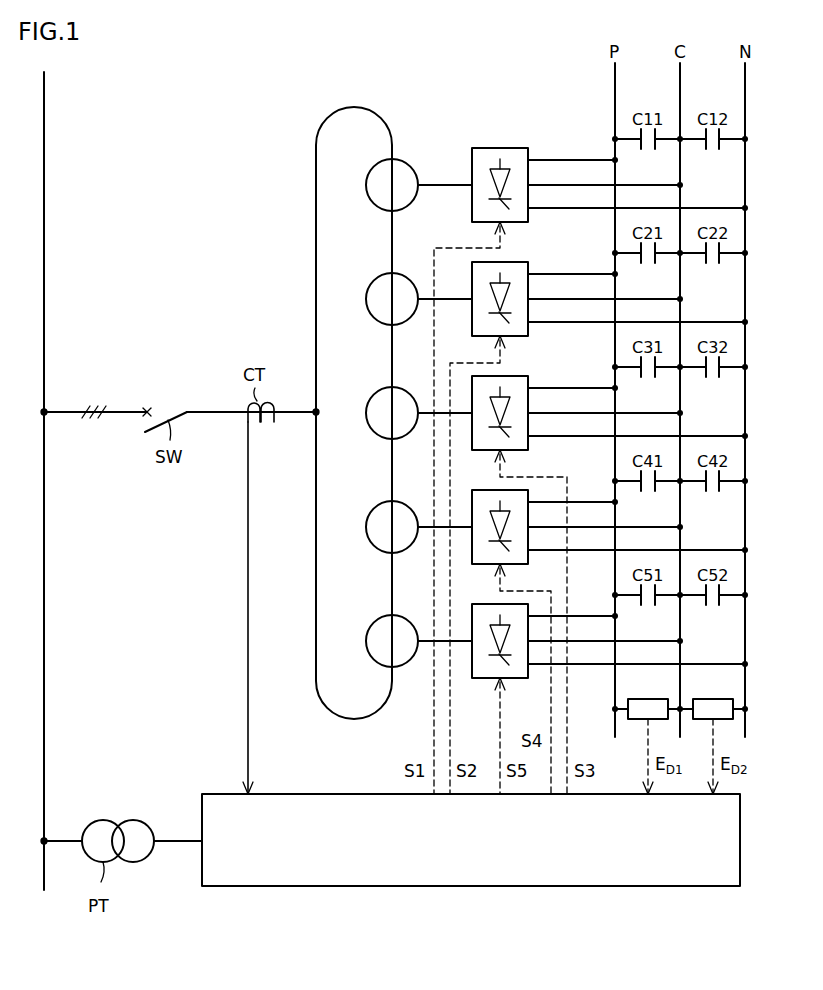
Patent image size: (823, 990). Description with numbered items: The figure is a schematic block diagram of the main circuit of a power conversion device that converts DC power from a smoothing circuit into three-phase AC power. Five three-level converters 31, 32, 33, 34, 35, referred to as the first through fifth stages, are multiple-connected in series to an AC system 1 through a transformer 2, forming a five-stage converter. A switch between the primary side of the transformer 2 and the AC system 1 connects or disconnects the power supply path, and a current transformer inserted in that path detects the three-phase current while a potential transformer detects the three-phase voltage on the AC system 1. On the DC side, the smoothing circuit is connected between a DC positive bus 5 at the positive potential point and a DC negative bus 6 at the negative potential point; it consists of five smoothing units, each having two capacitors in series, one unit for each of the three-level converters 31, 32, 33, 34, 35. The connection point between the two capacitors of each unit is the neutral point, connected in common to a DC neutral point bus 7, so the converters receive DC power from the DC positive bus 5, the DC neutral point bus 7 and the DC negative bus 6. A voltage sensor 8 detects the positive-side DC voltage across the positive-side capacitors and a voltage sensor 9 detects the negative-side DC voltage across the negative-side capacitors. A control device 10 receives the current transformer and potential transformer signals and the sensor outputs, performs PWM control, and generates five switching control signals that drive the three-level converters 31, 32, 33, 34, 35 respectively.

The AC system 1 is at (44, 104).
The transformer 2 is at (362, 100).
The DC positive bus 5 is at (614, 89).
The DC negative bus 6 is at (746, 89).
The DC neutral point bus 7 is at (681, 89).
The voltage sensor 8 is at (638, 699).
The voltage sensor 9 is at (703, 699).
The control device 10 is at (655, 886).
The 3-level converter 31 is at (512, 148).
The 3-level converter 32 is at (512, 262).
The 3-level converter 33 is at (512, 376).
The 3-level converter 34 is at (512, 564).
The 3-level converter 35 is at (517, 678).